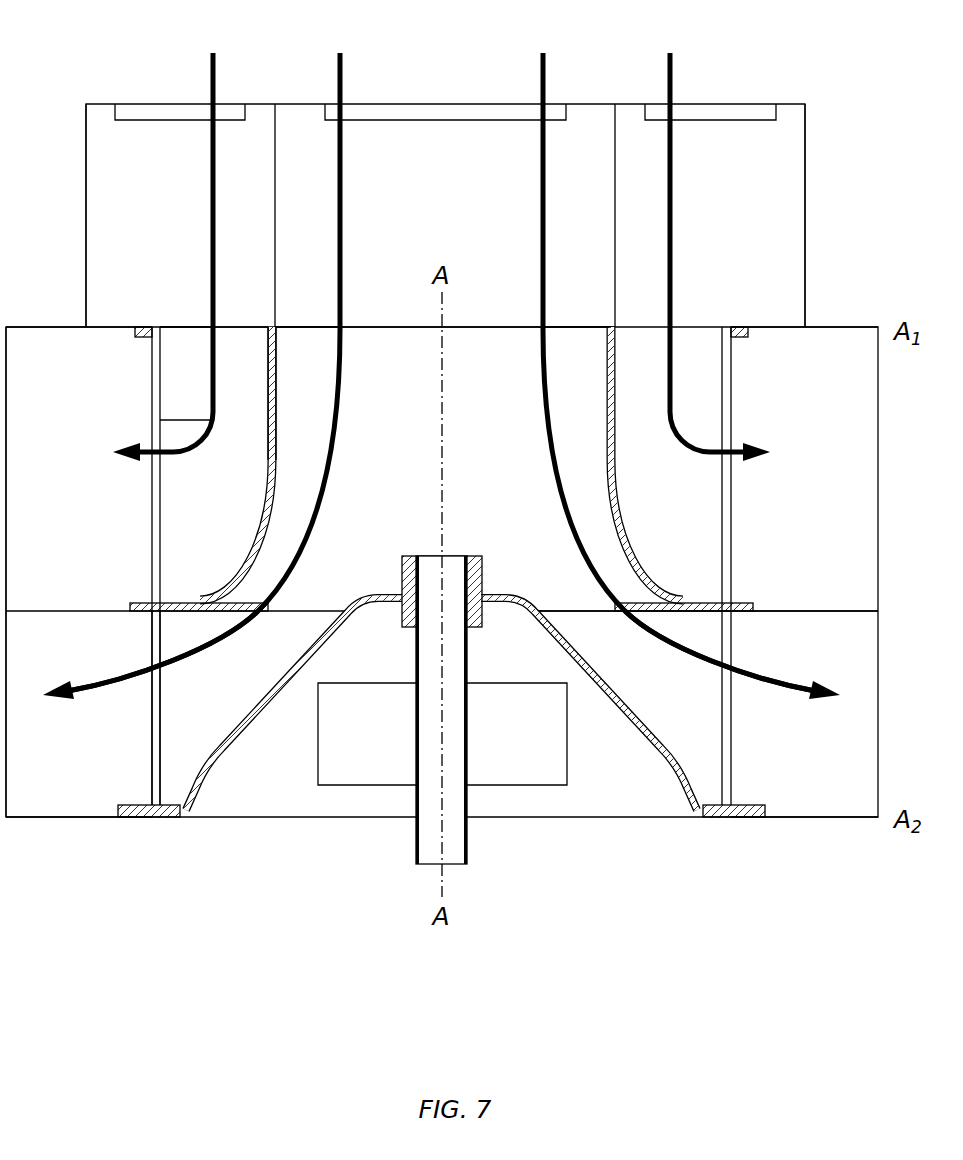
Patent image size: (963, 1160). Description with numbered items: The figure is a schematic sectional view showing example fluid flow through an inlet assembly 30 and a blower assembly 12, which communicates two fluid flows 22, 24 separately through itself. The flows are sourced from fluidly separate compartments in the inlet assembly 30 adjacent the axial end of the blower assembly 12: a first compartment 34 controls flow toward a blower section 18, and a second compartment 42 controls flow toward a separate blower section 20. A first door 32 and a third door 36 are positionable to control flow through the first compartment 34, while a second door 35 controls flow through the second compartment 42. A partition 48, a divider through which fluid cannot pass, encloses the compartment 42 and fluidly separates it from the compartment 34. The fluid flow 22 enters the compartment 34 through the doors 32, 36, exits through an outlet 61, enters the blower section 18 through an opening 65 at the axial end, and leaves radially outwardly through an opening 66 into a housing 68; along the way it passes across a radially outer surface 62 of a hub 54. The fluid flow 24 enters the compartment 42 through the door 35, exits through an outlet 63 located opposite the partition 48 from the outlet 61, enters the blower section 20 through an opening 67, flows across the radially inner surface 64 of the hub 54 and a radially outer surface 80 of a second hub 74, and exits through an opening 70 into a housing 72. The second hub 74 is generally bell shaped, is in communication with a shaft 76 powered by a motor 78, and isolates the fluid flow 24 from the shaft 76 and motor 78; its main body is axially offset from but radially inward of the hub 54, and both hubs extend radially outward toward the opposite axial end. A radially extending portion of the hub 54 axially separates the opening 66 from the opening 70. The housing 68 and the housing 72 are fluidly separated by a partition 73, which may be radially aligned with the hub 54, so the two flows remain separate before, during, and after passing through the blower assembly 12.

The blower assembly 12 is at (748, 385).
The blower section 18 is at (183, 410).
The blower section 20 is at (178, 757).
The fluid flow 22 is at (212, 77).
The fluid flow 24 is at (338, 77).
The inlet assembly 30 is at (48, 172).
The first door 32 is at (130, 108).
The first compartment 34 is at (138, 204).
The second door 35 is at (478, 108).
The third door 36 is at (760, 108).
The second compartment 42 is at (433, 204).
The partition 48 is at (275, 158).
The hub 54 is at (250, 535).
The outlet 61 is at (190, 322).
The radially outer surface 62 is at (265, 497).
The outlet 63 is at (381, 322).
The inner surface of guide wall 64 is at (255, 575).
The opening 65 is at (190, 338).
The opening 66 is at (148, 430).
The opening 67 is at (502, 333).
The housing 68 is at (68, 494).
The opening 70 is at (148, 750).
The housing 72 is at (68, 662).
The partition 73 is at (855, 611).
The second hub 74 is at (181, 818).
The shaft 76 is at (430, 780).
The motor 78 is at (538, 735).
The radially outer surface 80 is at (235, 700).